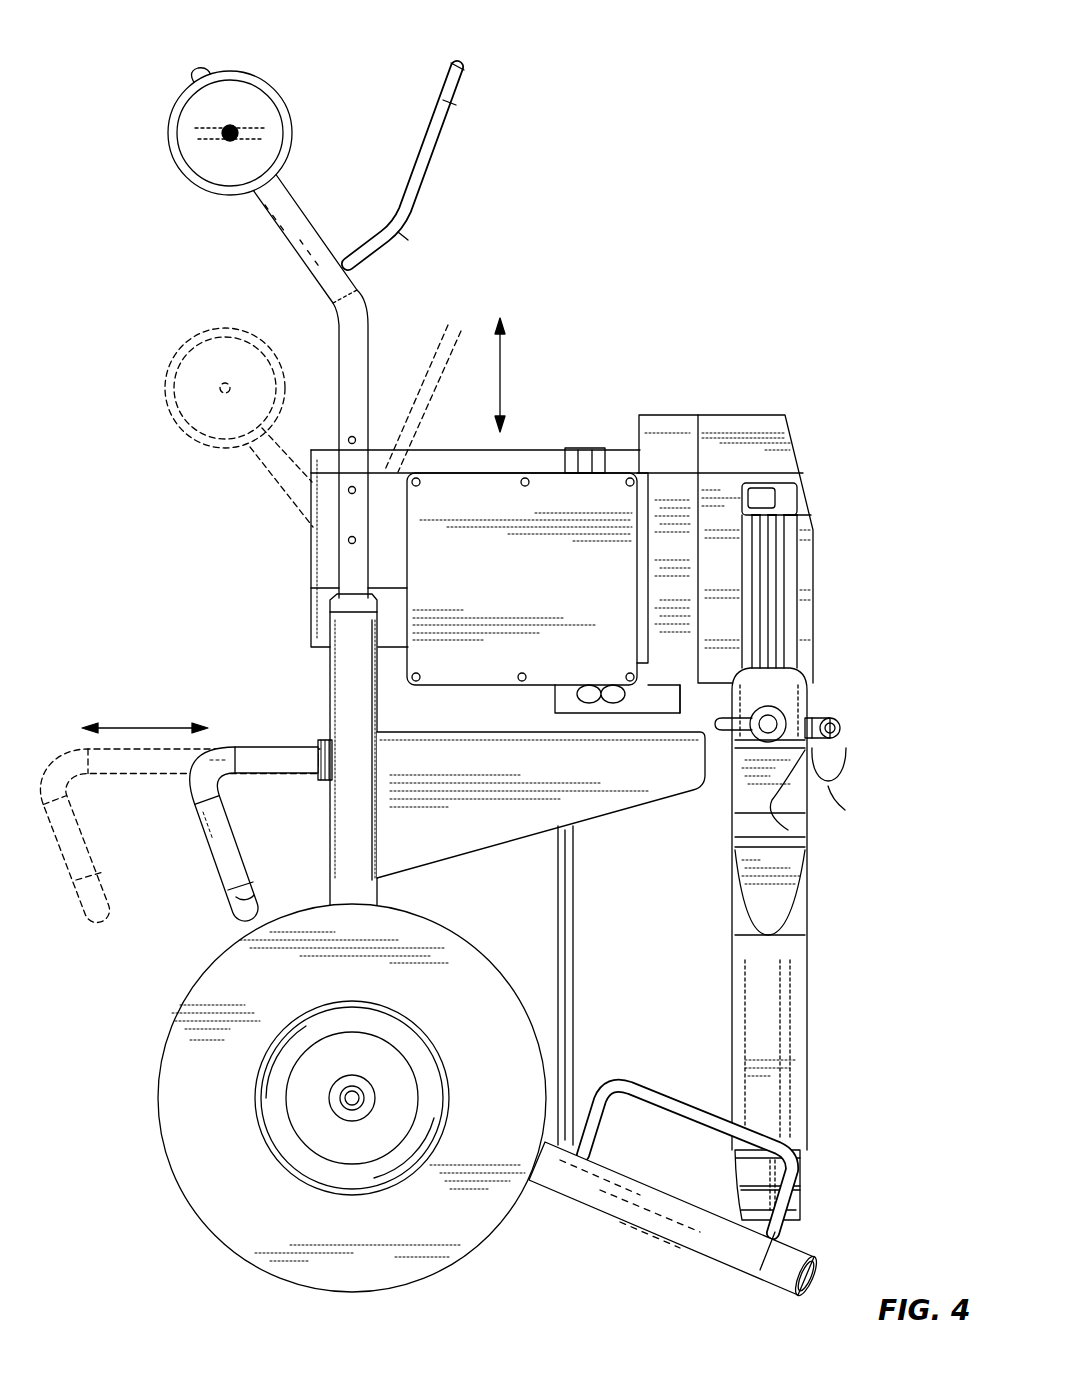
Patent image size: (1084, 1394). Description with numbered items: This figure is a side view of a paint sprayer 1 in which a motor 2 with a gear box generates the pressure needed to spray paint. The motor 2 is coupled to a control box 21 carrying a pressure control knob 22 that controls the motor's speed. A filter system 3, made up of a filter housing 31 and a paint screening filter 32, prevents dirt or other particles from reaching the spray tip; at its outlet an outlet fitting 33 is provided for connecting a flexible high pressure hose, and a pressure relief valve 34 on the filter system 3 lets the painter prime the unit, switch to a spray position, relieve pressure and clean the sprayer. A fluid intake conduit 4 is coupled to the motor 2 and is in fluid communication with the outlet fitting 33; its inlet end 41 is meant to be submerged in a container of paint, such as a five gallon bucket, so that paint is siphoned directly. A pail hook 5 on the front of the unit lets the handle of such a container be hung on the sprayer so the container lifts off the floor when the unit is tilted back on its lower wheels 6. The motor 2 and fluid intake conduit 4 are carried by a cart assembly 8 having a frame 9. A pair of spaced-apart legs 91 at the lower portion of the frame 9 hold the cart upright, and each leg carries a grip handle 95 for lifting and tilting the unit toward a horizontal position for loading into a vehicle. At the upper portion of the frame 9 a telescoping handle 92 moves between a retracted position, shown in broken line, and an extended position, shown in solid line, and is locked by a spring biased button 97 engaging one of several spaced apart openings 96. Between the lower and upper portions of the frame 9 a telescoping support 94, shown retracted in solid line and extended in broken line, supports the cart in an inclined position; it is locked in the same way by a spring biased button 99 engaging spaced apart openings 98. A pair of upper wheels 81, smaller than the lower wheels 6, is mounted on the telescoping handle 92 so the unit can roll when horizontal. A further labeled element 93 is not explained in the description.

The paint sprayer 1 is at (580, 52).
The motor 2 is at (748, 413).
The filter system 3 is at (811, 542).
The fluid intake conduit 4 is at (788, 909).
The pail hook 5 is at (828, 786).
The lower wheels 6 is at (160, 1117).
The cart assembly 8 is at (520, 1253).
The frame 9 is at (556, 932).
The control box 21 is at (521, 472).
The pressure control knob 22 is at (588, 449).
The filter housing 31 is at (798, 500).
The paint screening filter 32 is at (800, 590).
The outlet fitting 33 is at (832, 718).
The pressure relief valve 34 is at (730, 748).
The inlet end 41 is at (800, 1205).
The upper wheel 81 is at (246, 72).
The spaced-apart legs 91 is at (665, 1245).
The telescoping handle 92 is at (282, 236).
The grip handle 93 is at (452, 110).
The telescoping support 94 is at (207, 847).
The grip handle 95 is at (665, 1095).
The spaced apart openings 96 is at (347, 543).
The spring biased button 97 is at (330, 598).
The spaced apart openings 98 is at (312, 752).
The spring biased button 99 is at (312, 772).